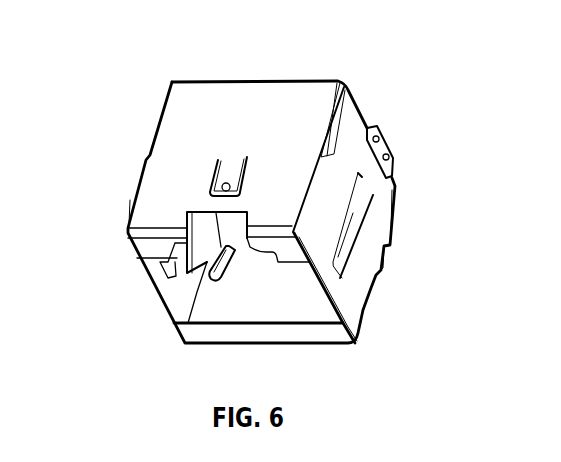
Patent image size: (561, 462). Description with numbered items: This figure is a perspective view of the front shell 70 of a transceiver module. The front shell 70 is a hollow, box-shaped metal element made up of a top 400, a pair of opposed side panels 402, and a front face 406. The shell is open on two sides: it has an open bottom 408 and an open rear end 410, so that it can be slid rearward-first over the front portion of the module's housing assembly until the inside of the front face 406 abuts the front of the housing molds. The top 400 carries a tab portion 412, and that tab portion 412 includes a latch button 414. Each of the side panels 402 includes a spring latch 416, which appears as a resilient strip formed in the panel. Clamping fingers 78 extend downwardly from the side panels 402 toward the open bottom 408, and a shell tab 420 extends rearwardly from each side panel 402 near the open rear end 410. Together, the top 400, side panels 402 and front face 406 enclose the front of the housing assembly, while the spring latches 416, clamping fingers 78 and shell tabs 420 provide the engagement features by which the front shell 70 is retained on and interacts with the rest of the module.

The front shell 70 is at (314, 46).
The clamping fingers 78 is at (385, 262).
The top 400 is at (183, 107).
The side panels 402 is at (138, 186).
The front face 406 is at (132, 287).
The open bottom 408 is at (318, 307).
The open rear end 410 is at (366, 85).
The tab portion 412 is at (243, 160).
The latch button 414 is at (225, 183).
The spring latch 416 is at (352, 220).
The shell tab 420 is at (393, 143).